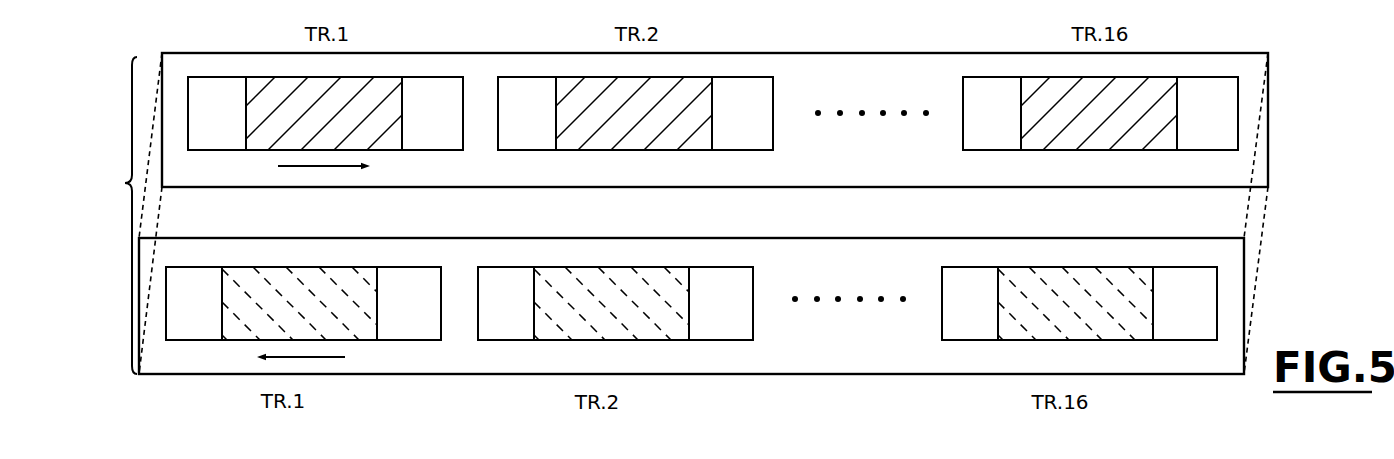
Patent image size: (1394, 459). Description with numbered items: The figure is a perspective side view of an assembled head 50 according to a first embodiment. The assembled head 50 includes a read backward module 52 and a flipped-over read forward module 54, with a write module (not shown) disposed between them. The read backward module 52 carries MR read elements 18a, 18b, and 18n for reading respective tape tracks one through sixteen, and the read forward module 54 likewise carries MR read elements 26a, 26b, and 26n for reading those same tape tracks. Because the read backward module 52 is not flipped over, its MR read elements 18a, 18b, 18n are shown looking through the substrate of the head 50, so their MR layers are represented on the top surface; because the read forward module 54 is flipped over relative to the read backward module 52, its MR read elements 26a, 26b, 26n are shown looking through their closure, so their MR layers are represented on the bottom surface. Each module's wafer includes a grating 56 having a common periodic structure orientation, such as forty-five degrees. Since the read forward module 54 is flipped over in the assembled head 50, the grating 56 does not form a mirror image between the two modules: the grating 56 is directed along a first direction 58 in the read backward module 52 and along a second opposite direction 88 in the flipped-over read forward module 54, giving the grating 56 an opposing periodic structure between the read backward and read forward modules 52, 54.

The assembled head 50 is at (709, 213).
The read backward module 52 is at (1272, 101).
The read forward module 54 is at (1250, 269).
The MR read element 18a is at (361, 74).
The MR read element 18b is at (673, 75).
The MR read element 18n is at (1154, 74).
The MR read element 26a is at (339, 262).
The MR read element 26b is at (647, 263).
The MR read element 26n is at (1106, 263).
The grating 56 is at (380, 136).
The first direction 58 is at (328, 167).
The second opposite direction 88 is at (329, 357).